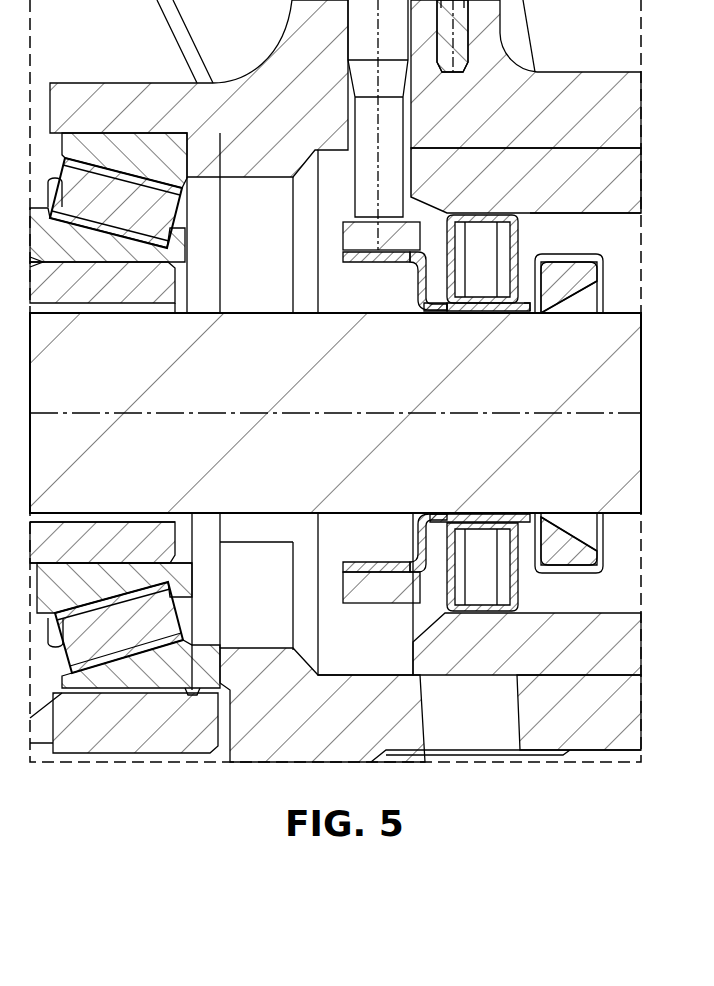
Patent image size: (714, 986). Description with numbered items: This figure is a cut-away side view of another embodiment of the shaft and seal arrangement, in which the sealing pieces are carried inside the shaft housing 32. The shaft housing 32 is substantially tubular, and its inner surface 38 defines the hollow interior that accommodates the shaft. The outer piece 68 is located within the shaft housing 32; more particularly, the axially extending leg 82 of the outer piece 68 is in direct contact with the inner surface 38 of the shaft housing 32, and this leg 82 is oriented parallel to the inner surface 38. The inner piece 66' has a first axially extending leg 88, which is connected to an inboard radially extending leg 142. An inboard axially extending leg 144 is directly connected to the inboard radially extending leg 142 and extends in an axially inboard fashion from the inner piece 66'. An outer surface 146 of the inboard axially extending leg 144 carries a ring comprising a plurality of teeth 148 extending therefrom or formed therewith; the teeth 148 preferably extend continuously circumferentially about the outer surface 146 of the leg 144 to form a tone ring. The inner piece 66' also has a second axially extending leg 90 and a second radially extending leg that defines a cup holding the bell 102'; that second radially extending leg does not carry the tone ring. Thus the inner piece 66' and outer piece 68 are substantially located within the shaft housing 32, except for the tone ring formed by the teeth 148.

The shaft housing 32 is at (620, 180).
The inner surface 38 is at (627, 214).
The outer piece 68 is at (476, 210).
The axially extending leg 82 is at (503, 213).
The first axially extending leg 88 is at (443, 308).
The inner piece 66' is at (488, 330).
The second axially extending leg 90 is at (527, 310).
The bell 102' is at (575, 326).
The inboard radially extending leg 142 is at (418, 290).
The inboard axially extending leg 144 is at (365, 258).
The outer surface 146 is at (343, 222).
The teeth 148 is at (368, 217).